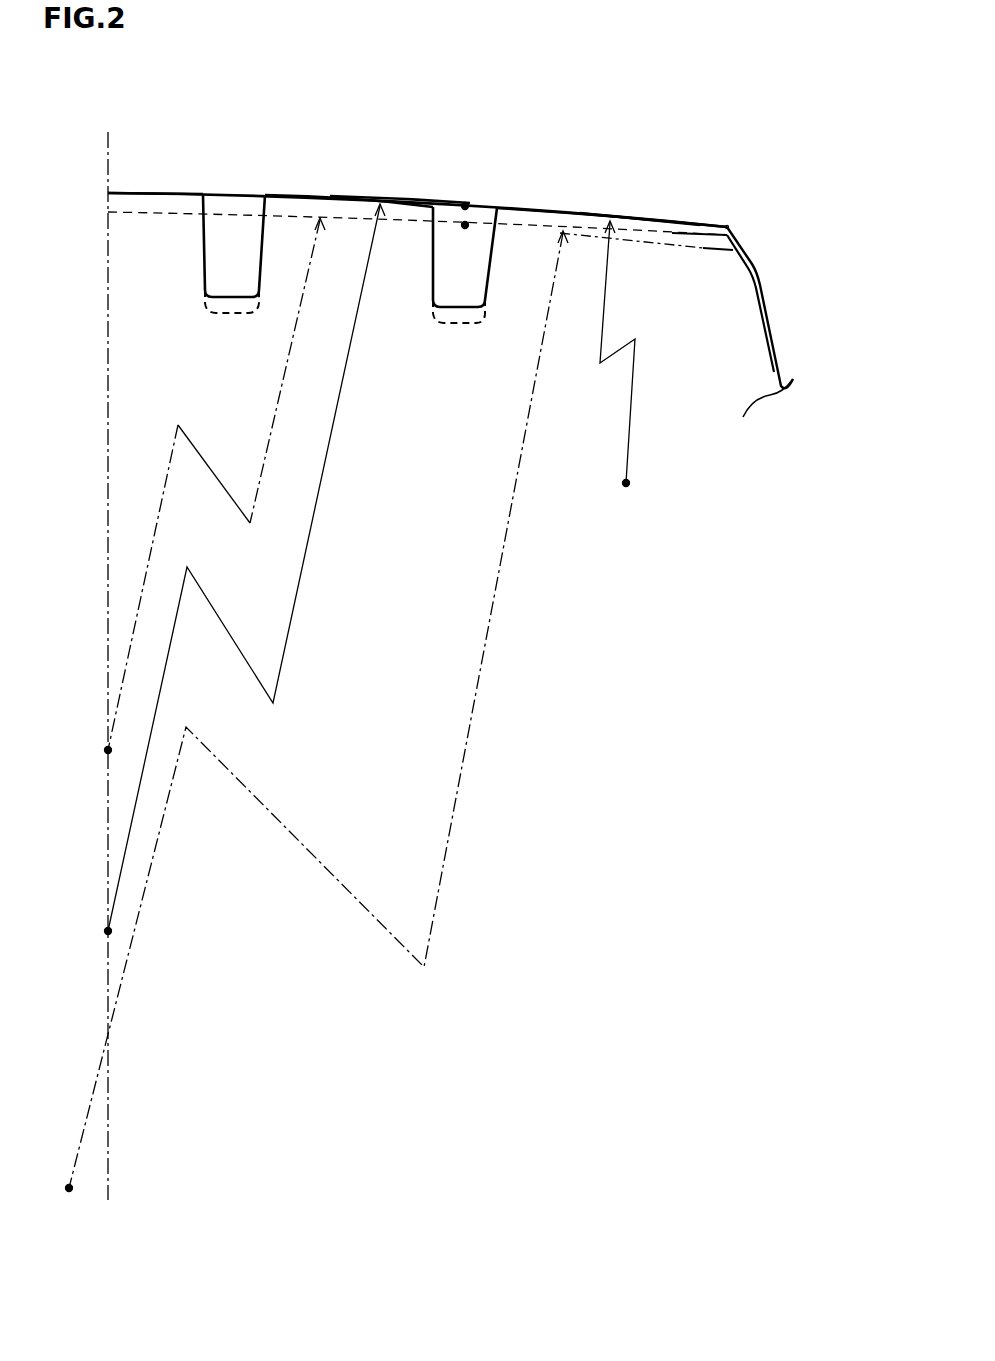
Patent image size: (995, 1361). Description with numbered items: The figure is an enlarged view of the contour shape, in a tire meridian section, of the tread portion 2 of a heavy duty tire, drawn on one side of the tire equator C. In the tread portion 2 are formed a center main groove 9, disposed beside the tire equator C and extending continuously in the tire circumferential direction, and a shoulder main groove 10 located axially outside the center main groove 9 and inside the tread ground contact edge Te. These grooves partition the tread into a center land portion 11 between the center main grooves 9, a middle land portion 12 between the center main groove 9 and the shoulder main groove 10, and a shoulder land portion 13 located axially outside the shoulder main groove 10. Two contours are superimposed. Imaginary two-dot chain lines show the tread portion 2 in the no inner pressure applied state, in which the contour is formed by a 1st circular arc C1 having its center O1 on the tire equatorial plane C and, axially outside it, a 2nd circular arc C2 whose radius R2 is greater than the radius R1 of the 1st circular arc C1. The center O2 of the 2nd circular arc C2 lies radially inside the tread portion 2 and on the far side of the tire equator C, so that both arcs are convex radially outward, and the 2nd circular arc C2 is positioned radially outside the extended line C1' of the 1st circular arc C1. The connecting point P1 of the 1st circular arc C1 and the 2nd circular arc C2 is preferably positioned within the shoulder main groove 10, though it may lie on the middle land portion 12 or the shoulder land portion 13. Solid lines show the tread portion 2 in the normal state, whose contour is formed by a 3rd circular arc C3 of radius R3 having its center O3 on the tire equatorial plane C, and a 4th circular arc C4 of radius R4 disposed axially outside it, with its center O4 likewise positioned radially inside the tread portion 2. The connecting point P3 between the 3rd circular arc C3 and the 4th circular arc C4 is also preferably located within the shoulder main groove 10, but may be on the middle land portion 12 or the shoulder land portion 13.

The tread portion 2 is at (776, 91).
The center main grooves 9 is at (230, 240).
The shoulder main grooves 10 is at (450, 253).
The center land portion 11 is at (158, 277).
The middle land portions 12 is at (343, 253).
The shoulder land portions 13 is at (528, 267).
The tire equator C is at (107, 651).
The 1st circular arc C1 is at (417, 175).
The extended line of the 1st circular arc C1' is at (659, 185).
The 2nd circular arcs C2 is at (682, 232).
The 3rd circular arc C3 is at (403, 199).
The 4th circular arc C4 is at (633, 215).
The connecting point of the 1st and 2nd circular arcs P1 is at (465, 225).
The connecting point of the 3rd and 4th circular arcs P3 is at (465, 206).
The tread ground contact edge Te is at (730, 226).
The radius of the 1st circular arc R1 is at (216, 484).
The radius of the 2nd circular arc R2 is at (318, 709).
The radius of the 3rd circular arc R3 is at (246, 567).
The radius of the 4th circular arc R4 is at (619, 352).
The center of the 1st circular arc O1 is at (87, 750).
The center of the 2nd circular arc O2 is at (55, 1201).
The center of the 3rd circular arc O3 is at (87, 931).
The center of the 4th circular arc O4 is at (625, 503).